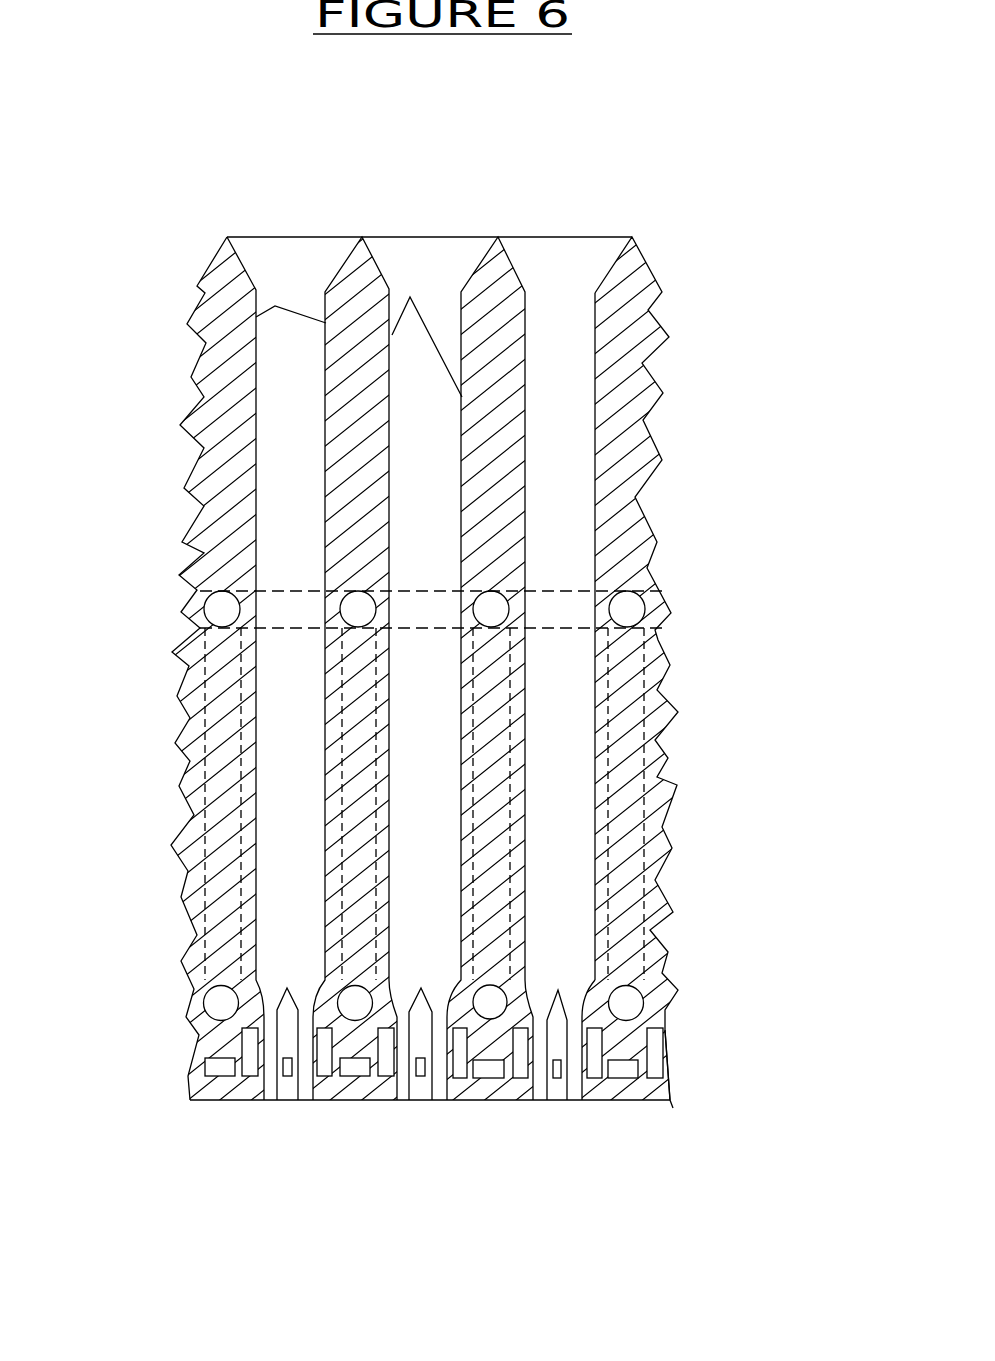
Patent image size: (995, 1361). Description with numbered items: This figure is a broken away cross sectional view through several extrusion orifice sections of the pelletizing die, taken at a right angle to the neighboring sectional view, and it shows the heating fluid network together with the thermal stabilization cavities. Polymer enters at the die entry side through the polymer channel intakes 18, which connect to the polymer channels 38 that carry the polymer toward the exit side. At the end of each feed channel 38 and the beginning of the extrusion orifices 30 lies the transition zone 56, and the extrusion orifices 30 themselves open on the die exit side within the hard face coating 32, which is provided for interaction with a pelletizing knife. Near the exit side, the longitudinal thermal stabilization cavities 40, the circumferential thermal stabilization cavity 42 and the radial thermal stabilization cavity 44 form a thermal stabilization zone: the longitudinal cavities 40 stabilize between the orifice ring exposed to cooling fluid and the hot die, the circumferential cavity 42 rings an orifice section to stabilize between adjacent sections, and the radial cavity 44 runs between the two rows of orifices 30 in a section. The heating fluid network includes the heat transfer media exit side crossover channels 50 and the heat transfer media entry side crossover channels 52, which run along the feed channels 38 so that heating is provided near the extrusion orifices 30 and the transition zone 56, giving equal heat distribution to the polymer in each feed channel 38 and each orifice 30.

The polymer channel intakes 18 is at (582, 253).
The extrusion orifices 30 is at (543, 1100).
The hard face coating 32 is at (608, 1100).
The polymer channels 38 is at (580, 373).
The longitudinal thermal stabilization cavities 40 is at (210, 1100).
The circumferential thermal stabilization cavity 42 is at (307, 1100).
The radial thermal stabilization cavity 44 is at (410, 1100).
The heat transfer media exit side crossover channels 50 is at (198, 590).
The heat transfer media entry side crossover channels 52 is at (190, 980).
The transition zone 56 is at (582, 1000).